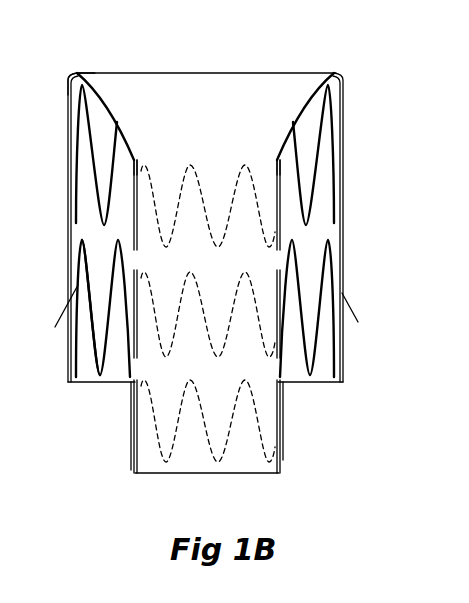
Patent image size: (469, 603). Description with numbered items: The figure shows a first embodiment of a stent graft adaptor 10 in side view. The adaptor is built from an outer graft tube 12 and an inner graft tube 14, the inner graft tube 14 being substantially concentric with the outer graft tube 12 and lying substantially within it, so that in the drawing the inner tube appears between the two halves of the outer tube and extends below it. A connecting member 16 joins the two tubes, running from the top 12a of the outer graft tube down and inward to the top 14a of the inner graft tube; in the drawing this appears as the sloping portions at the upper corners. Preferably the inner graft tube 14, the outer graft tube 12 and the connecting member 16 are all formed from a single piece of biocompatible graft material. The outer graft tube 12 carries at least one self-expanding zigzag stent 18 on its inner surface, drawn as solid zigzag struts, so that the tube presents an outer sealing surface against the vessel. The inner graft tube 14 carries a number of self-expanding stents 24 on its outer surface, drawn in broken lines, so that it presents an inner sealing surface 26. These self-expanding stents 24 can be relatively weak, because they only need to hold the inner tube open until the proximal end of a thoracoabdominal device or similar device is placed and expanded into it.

The stent graft adaptor 10 is at (347, 60).
The outer graft tube 12 is at (68, 253).
The top of the outer graft tube 12a is at (70, 78).
The inner graft tube 14 is at (133, 405).
The top of the inner graft tube 14a is at (135, 160).
The connecting member 16 is at (310, 92).
The self-expanding zigzag stent 18 is at (92, 328).
The self-expanding stents 24 is at (158, 440).
The inner sealing surface 26 is at (277, 430).